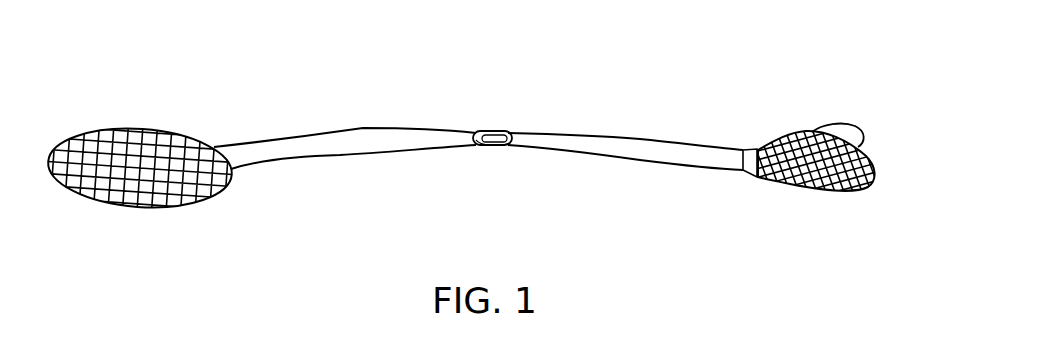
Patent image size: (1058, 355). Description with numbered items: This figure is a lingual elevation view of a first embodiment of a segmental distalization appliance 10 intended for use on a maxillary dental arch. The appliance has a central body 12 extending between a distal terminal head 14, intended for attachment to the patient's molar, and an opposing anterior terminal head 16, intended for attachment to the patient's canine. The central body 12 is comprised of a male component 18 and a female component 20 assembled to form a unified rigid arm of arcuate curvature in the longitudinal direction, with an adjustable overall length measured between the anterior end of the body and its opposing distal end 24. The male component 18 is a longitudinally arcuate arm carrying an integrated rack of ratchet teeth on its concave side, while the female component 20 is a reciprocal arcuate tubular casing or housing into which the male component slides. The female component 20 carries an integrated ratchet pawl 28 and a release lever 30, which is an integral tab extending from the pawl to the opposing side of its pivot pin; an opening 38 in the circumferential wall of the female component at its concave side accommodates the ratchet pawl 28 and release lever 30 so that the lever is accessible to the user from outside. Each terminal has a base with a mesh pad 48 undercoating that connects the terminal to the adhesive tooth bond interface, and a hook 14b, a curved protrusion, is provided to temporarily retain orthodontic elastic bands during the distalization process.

The segmental distalization appliance 10 is at (870, 88).
The central body 12 is at (614, 130).
The distal terminal head 14 is at (802, 127).
The hook 14b is at (850, 129).
The anterior terminal head 16 is at (161, 127).
The male component 18 is at (333, 148).
The female component 20 is at (681, 150).
The distal end 24 is at (742, 158).
The ratchet pawl 28 is at (484, 135).
The release lever 30 is at (500, 135).
The opening 38 is at (507, 145).
The mesh pad 48 is at (137, 206).